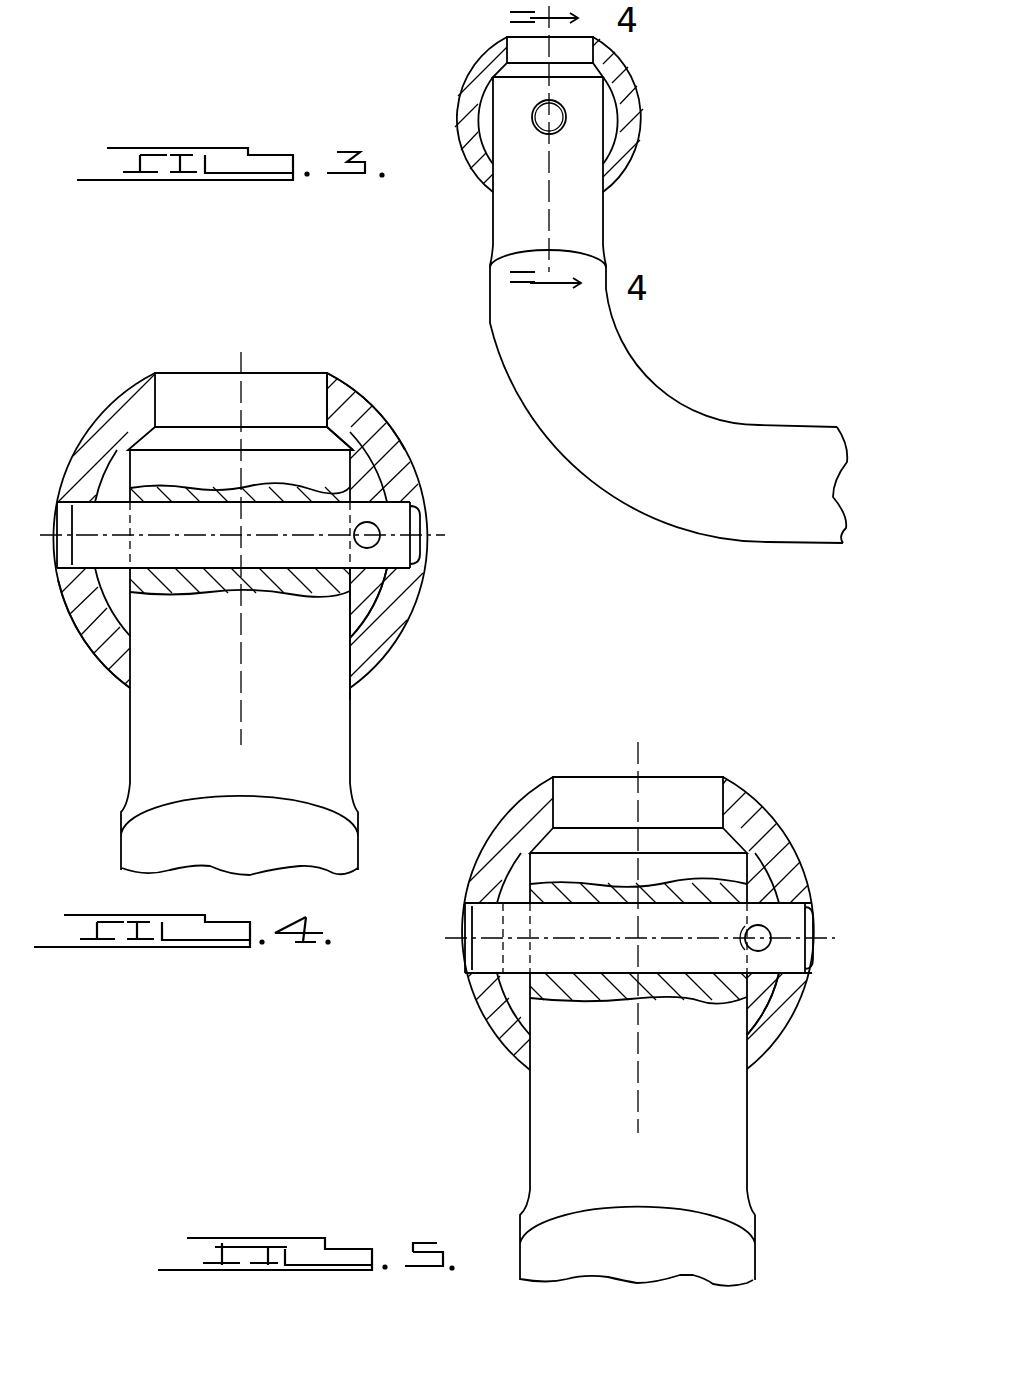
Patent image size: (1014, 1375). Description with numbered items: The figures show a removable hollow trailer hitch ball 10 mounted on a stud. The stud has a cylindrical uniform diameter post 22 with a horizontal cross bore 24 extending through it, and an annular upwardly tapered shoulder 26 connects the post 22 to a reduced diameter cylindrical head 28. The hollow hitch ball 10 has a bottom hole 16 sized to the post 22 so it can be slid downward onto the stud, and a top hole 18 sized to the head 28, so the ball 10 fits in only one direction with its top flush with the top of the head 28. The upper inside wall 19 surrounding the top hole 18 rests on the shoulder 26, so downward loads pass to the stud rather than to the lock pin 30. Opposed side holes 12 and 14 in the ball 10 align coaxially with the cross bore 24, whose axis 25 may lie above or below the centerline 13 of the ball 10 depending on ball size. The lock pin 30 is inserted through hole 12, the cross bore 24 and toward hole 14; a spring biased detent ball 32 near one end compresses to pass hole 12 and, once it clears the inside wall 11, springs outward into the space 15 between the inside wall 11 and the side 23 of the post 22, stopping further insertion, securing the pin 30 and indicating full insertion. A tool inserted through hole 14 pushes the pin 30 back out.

In FIG. 3, the hollow trailer hitch ball 10 is at (646, 154).
In FIG. 4, the hollow trailer hitch ball 10 is at (380, 413).
In FIG. 5, the hollow trailer hitch ball 10 is at (735, 797).
In FIG. 4, the inside wall 11 is at (352, 472).
In FIG. 5, the inside wall 11 is at (752, 890).
In FIG. 4, the hole 12 is at (427, 560).
In FIG. 5, the hole 12 is at (730, 889).
In FIG. 4, the centerline 13 is at (427, 543).
In FIG. 4, the hole 14 is at (87, 570).
In FIG. 4, the space 15 is at (408, 463).
In FIG. 4, the bottom hole 16 is at (350, 680).
In FIG. 4, the top hole 18 is at (327, 388).
In FIG. 4, the upper inside wall 19 is at (350, 393).
In FIG. 3, the post 22 is at (600, 226).
In FIG. 4, the post 22 is at (323, 627).
In FIG. 5, the post 22 is at (733, 1110).
In FIG. 4, the side 23 is at (356, 610).
In FIG. 5, the side 23 is at (748, 990).
In FIG. 4, the cross bore 24 is at (350, 603).
In FIG. 4, the axis 25 is at (446, 528).
In FIG. 5, the axis 25 is at (700, 897).
In FIG. 4, the shoulder 26 is at (393, 430).
In FIG. 3, the head 28 is at (548, 57).
In FIG. 4, the head 28 is at (172, 385).
In FIG. 5, the head 28 is at (667, 773).
In FIG. 3, the lock pin 30 is at (566, 117).
In FIG. 4, the lock pin 30 is at (86, 513).
In FIG. 5, the lock pin 30 is at (790, 912).
In FIG. 3, the detent ball 32 is at (532, 112).
In FIG. 4, the detent ball 32 is at (381, 524).
In FIG. 5, the detent ball 32 is at (762, 950).